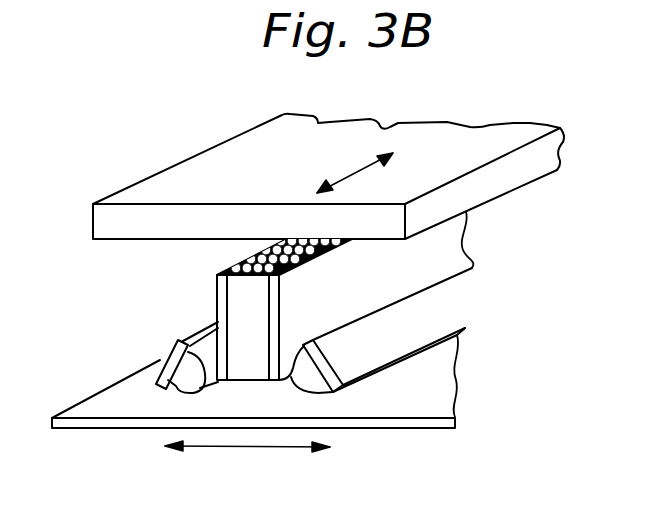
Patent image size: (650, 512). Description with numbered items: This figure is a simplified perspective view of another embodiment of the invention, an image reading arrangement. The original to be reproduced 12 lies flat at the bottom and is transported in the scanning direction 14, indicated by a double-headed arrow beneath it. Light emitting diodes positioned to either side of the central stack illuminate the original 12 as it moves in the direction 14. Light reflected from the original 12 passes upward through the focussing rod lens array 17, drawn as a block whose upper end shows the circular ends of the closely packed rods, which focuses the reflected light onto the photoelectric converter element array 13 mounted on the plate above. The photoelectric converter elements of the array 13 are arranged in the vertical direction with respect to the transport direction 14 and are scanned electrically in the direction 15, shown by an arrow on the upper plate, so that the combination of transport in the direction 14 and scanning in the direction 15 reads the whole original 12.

The original to be reproduced 12 is at (418, 428).
The photoelectric converter element array 13 is at (452, 133).
The scanning direction 14 is at (252, 448).
The scanning direction of the photoelectric converter elements 15 is at (348, 175).
The focussing rod lens array 17 is at (232, 307).